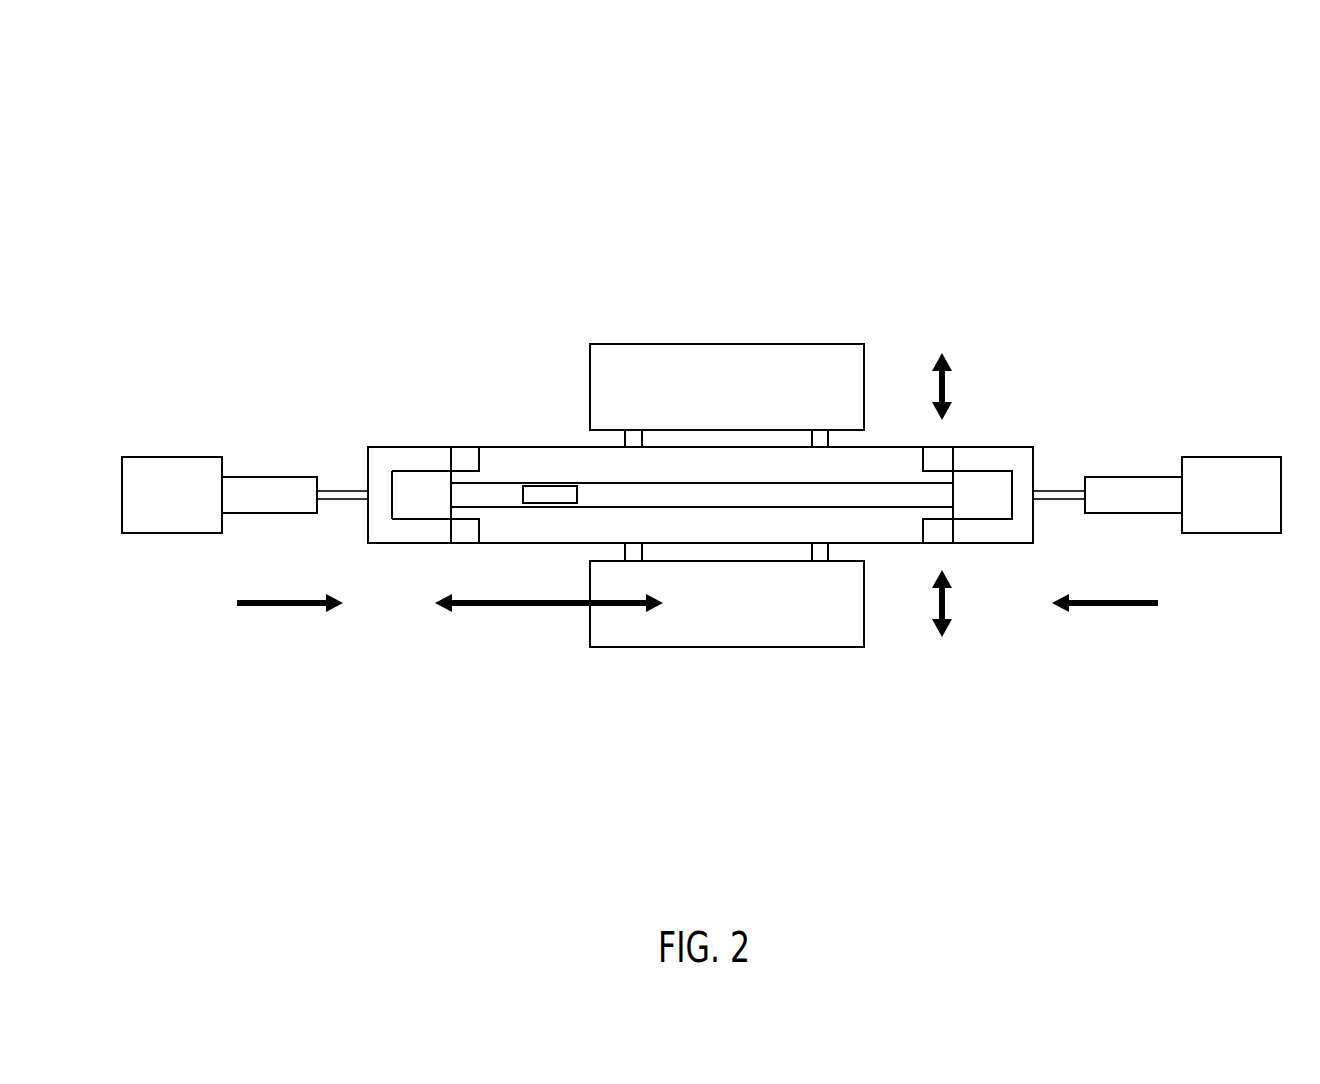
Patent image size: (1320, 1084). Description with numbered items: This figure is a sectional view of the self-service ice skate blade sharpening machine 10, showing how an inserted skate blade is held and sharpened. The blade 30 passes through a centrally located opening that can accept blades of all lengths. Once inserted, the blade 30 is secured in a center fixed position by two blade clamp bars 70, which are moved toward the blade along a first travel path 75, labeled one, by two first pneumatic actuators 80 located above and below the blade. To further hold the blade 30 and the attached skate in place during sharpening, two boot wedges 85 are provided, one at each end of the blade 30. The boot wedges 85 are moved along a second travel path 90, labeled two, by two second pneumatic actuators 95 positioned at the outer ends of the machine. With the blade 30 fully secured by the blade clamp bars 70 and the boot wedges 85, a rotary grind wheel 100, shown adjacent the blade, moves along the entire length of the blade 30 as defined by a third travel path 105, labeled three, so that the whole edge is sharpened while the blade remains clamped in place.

The self-service ice skate blade sharpening machine 10 is at (321, 204).
The blade 30 is at (852, 493).
The blade clamp bars 70 is at (769, 462).
The first travel path 75 is at (947, 385).
The first pneumatic actuators 80 is at (675, 385).
The boot wedges 85 is at (413, 459).
The second travel path 90 is at (298, 603).
The second pneumatic actuators 95 is at (180, 483).
The rotary grind wheel 100 is at (557, 495).
The third travel path 105 is at (522, 607).